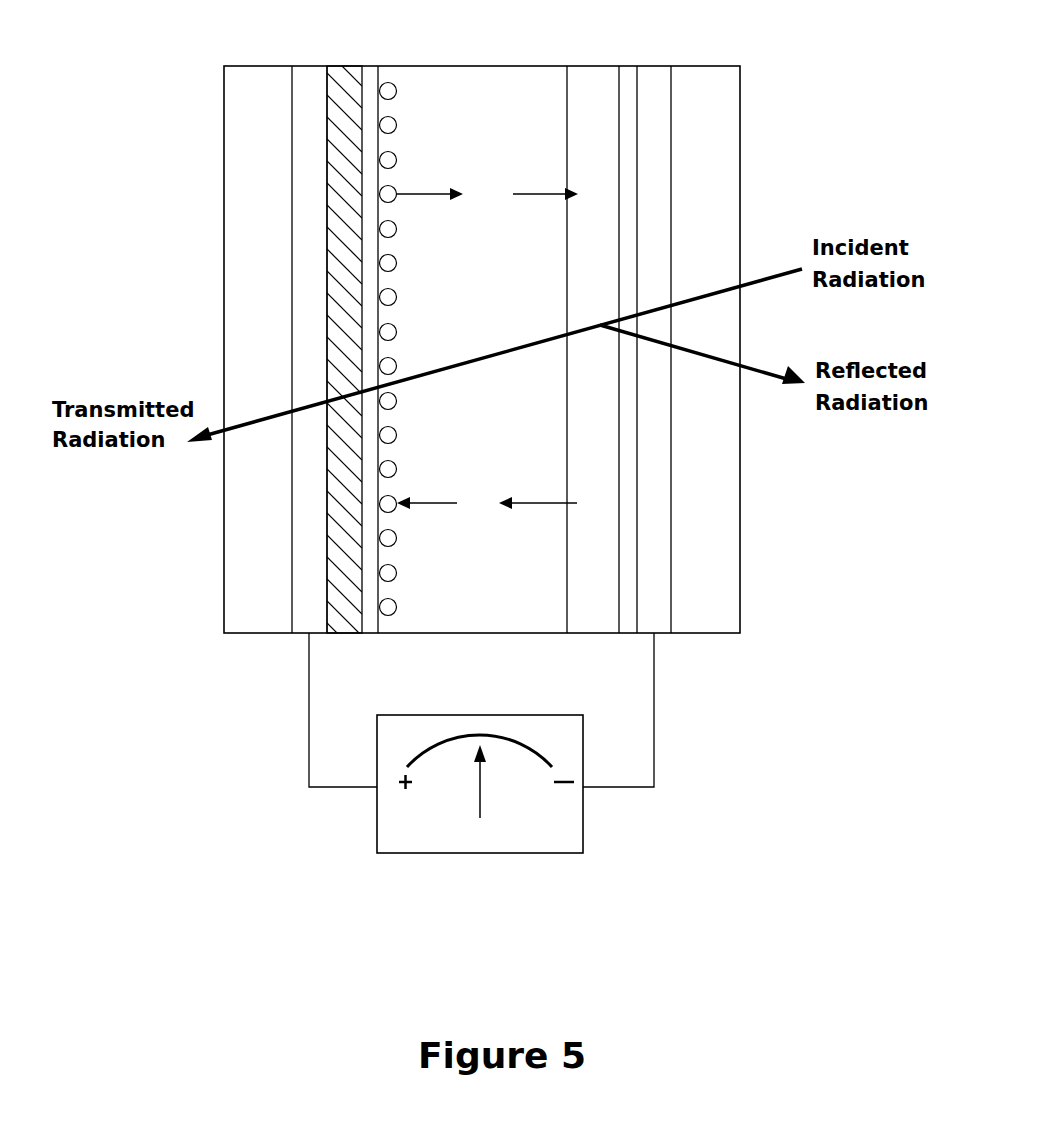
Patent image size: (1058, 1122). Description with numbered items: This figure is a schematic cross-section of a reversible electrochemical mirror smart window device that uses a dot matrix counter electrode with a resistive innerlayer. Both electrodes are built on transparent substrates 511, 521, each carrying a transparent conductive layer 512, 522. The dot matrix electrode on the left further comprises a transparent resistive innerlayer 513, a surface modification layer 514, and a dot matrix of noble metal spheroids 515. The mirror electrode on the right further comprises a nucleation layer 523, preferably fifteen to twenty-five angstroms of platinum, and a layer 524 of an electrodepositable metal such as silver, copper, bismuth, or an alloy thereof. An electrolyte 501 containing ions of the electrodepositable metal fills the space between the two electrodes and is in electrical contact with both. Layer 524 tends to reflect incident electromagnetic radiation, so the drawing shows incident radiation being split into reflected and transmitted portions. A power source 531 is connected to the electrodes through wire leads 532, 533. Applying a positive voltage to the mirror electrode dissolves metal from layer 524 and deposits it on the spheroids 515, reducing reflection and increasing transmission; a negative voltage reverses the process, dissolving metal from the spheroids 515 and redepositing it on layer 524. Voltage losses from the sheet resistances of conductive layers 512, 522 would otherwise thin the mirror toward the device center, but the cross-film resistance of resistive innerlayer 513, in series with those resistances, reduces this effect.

The electrolyte 501 is at (501, 340).
The transparent substrate 511 is at (262, 349).
The transparent conductive layer 512 is at (311, 78).
The transparent resistive innerlayer 513 is at (342, 80).
The surface modification layer 514 is at (370, 73).
The noble metal spheroids 515 is at (392, 88).
The transparent substrate 521 is at (698, 349).
The transparent conductive layer 522 is at (655, 82).
The nucleation layer 523 is at (627, 82).
The layer of electrodepositable metal 524 is at (594, 82).
The power source 531 is at (508, 723).
The wire lead 532 is at (307, 718).
The wire lead 533 is at (656, 718).